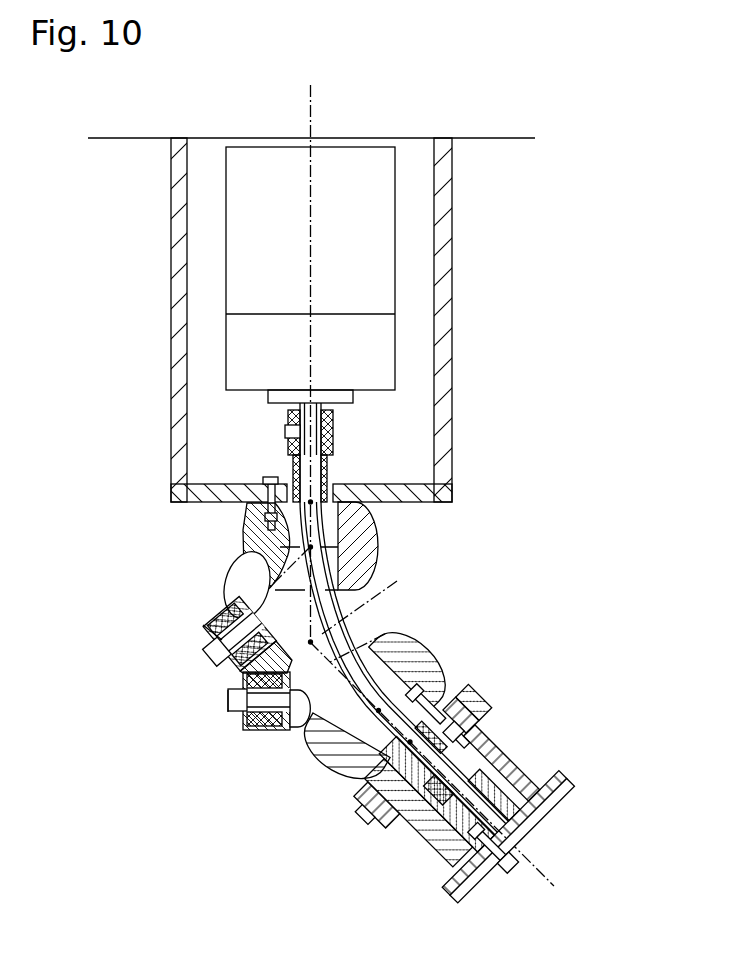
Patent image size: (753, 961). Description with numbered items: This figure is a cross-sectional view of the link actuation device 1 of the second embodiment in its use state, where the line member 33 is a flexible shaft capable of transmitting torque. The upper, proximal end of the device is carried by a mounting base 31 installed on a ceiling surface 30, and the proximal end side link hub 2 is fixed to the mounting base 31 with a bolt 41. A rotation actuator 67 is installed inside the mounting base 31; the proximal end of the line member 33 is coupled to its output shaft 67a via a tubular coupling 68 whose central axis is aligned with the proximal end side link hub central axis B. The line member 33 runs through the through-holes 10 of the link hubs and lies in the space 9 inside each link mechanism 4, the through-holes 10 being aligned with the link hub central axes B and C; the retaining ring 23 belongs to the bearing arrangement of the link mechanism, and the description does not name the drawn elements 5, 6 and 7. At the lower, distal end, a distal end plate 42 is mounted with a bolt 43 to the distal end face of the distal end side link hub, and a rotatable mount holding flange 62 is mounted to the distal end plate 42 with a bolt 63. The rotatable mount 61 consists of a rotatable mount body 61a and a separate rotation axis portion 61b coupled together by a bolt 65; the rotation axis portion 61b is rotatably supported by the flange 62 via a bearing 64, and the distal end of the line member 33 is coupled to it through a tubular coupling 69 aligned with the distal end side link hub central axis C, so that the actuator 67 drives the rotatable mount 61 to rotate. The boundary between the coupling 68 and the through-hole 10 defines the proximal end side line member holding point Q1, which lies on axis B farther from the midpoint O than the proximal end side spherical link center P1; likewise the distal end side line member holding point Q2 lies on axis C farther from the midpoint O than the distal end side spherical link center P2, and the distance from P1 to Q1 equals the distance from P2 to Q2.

The link actuation device 1 is at (178, 592).
The proximal end side link hub 2 is at (248, 522).
The link mechanism 4 is at (176, 681).
The arm 5 is at (223, 578).
The lever 6 is at (295, 732).
The bearing 7 is at (207, 630).
The space 9 is at (230, 665).
The through-hole 10 is at (293, 543).
The retaining ring 23 is at (210, 645).
The ceiling surface 30 is at (485, 140).
The mounting base 31 is at (452, 320).
The line member 33 is at (349, 627).
The bolt 41 is at (268, 478).
The distal end plate 42 is at (470, 690).
The bolt 43 is at (483, 718).
The rotatable mount 61 is at (572, 837).
The rotatable mount body 61a is at (550, 797).
The rotation axis portion 61b is at (527, 825).
The rotatable mount holding flange 62 is at (427, 837).
The bolt 63 is at (392, 824).
The bearing 64 is at (447, 850).
The bolt 65 is at (503, 848).
The rotation actuator 67 is at (397, 247).
The output shaft 67a is at (313, 424).
The coupling 68 is at (334, 441).
The coupling 69 is at (463, 765).
The proximal end side link hub central axis B is at (368, 597).
The distal end side link hub central axis C is at (385, 634).
The midpoint O is at (310, 642).
The proximal end side spherical link center P1 is at (312, 547).
The distal end side spherical link center P2 is at (379, 711).
The proximal end side line member holding point Q1 is at (312, 503).
The distal end side line member holding point Q2 is at (411, 741).